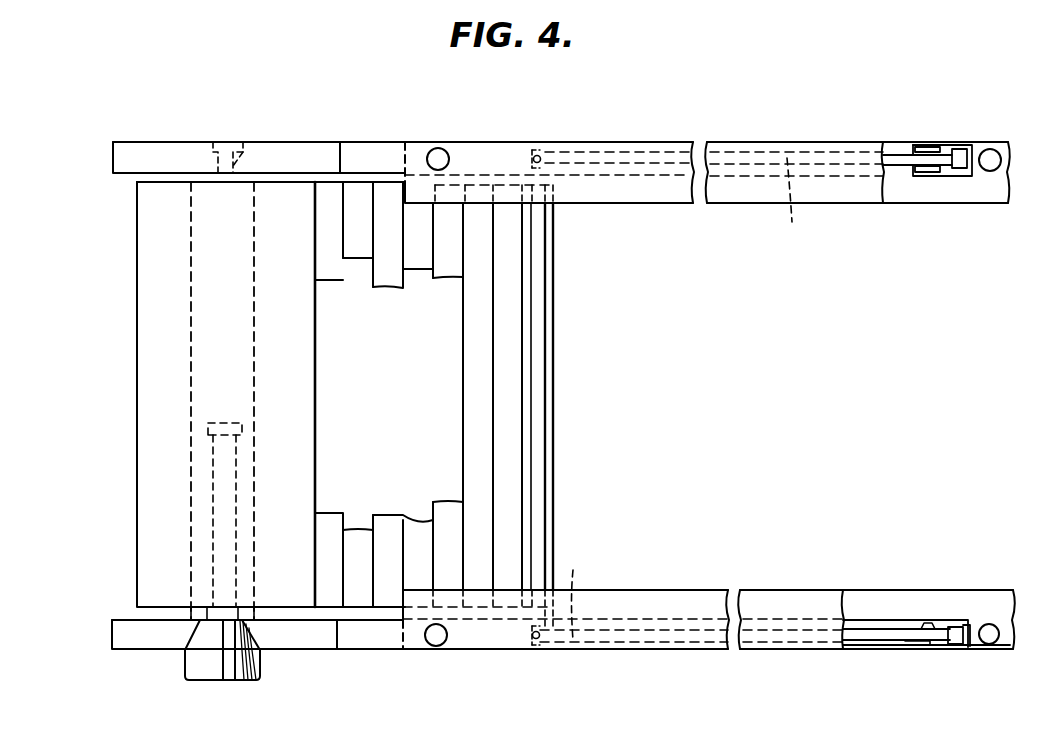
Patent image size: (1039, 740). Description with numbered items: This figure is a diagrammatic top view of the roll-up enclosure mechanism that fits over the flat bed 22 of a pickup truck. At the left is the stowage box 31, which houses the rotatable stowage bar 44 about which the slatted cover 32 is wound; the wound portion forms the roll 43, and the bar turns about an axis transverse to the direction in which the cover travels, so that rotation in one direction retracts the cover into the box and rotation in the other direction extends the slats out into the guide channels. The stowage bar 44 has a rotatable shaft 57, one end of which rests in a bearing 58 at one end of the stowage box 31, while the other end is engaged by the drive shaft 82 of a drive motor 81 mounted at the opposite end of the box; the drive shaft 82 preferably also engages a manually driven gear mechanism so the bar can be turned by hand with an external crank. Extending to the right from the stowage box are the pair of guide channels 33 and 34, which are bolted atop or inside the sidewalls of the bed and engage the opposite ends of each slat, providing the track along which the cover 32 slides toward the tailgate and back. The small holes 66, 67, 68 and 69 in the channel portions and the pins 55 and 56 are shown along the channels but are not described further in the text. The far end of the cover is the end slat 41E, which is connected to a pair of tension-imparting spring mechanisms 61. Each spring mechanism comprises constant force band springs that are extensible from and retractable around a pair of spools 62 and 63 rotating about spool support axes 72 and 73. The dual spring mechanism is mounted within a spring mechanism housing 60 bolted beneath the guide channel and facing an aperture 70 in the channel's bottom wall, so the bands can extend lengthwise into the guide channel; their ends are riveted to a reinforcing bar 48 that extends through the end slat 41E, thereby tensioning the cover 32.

The flat bed 22 is at (867, 398).
The stowage box 31 is at (112, 413).
The slatted cover 32 is at (556, 347).
The guide channel 33 is at (752, 165).
The guide channel 34 is at (768, 650).
The end slat 41E is at (554, 459).
The roll 43 is at (316, 303).
The rotatable stowage bar 44 is at (250, 173).
The reinforcing bar 48 is at (537, 511).
The lower pivot pin 55 is at (535, 642).
The upper pivot pin 56 is at (535, 150).
The rotatable shaft 57 is at (243, 152).
The bearing 58 is at (215, 142).
The spring mechanism housing 60 is at (918, 623).
The tension-imparting spring mechanism 61 is at (905, 646).
The spool 62 is at (916, 646).
The spool 63 is at (955, 646).
The upper hole 66 is at (432, 148).
The upper frame hole 67 is at (986, 148).
The lower hole 68 is at (434, 647).
The lower frame hole 69 is at (1002, 649).
The aperture 70 is at (943, 620).
The spool support axis 72 is at (928, 622).
The spool support axis 73 is at (962, 631).
The drive motor 81 is at (208, 665).
The drive shaft 82 is at (218, 525).